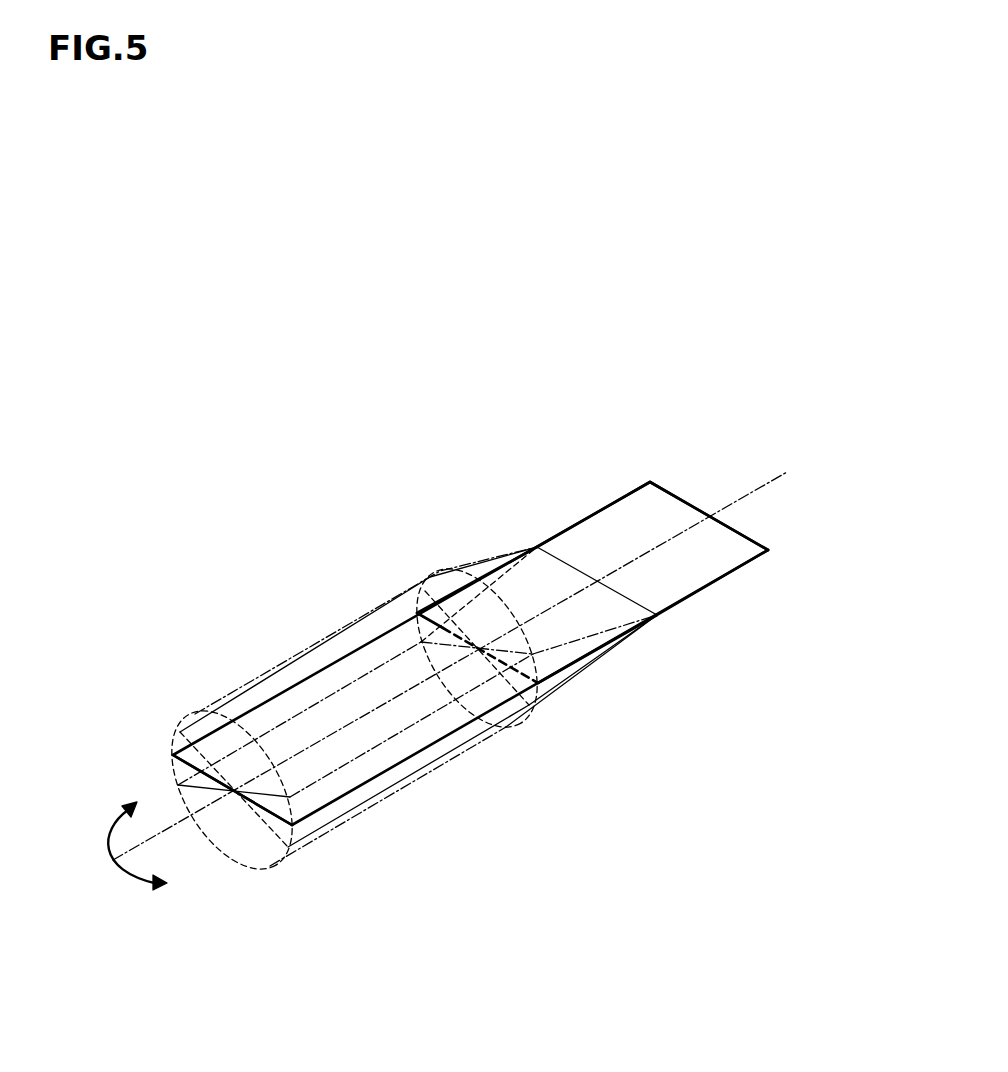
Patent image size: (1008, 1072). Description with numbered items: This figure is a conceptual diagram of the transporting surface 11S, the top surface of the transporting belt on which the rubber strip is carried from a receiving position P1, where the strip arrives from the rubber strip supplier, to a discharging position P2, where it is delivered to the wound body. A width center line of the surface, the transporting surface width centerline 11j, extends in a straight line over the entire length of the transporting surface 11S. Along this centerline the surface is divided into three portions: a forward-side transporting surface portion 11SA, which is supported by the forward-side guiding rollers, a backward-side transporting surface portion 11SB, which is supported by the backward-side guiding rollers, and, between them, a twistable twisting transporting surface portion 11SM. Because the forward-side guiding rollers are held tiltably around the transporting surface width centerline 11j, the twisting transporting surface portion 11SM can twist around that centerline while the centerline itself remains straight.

The transporting surface 11S is at (511, 355).
The forward-side transporting surface portion 11SA is at (342, 680).
The backward-side transporting surface portion 11SB is at (608, 528).
The twisting transporting surface portion 11SM is at (520, 587).
The transporting surface width centerline 11j is at (760, 490).
The receiving position P1 is at (651, 477).
The discharging position P2 is at (172, 757).